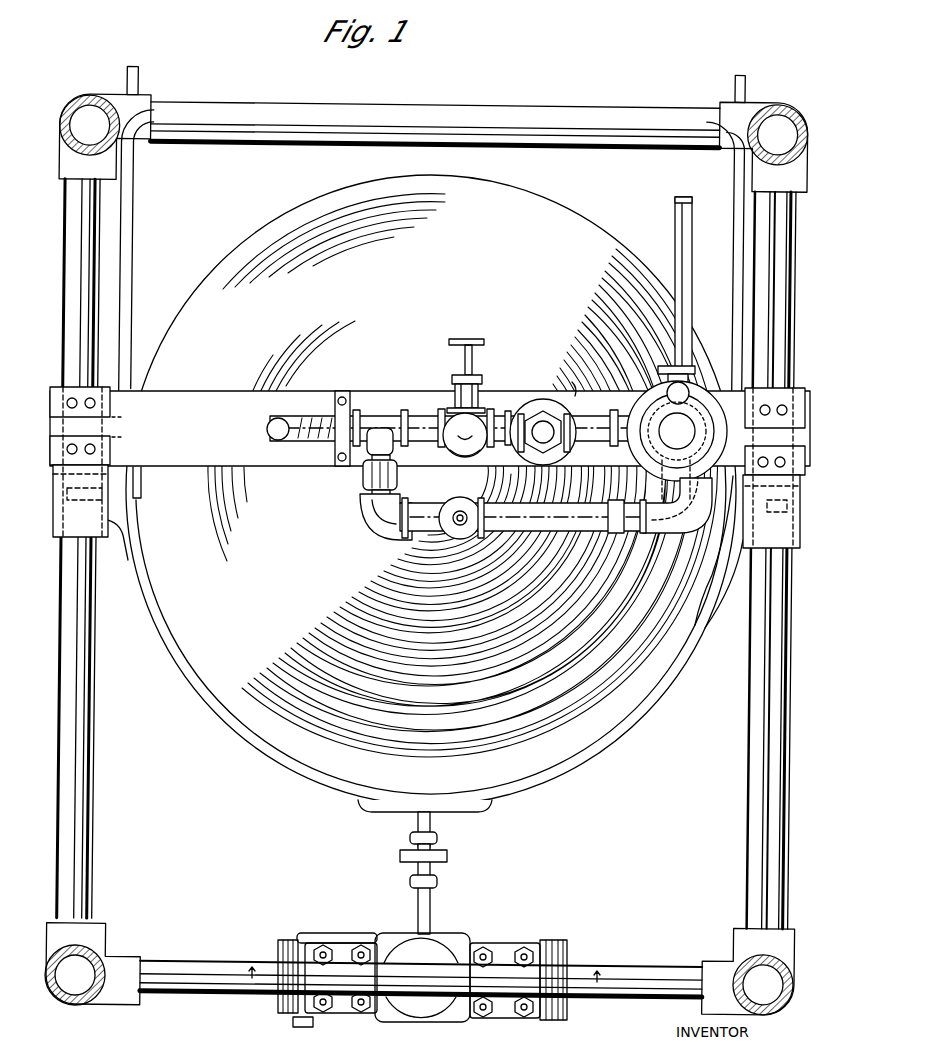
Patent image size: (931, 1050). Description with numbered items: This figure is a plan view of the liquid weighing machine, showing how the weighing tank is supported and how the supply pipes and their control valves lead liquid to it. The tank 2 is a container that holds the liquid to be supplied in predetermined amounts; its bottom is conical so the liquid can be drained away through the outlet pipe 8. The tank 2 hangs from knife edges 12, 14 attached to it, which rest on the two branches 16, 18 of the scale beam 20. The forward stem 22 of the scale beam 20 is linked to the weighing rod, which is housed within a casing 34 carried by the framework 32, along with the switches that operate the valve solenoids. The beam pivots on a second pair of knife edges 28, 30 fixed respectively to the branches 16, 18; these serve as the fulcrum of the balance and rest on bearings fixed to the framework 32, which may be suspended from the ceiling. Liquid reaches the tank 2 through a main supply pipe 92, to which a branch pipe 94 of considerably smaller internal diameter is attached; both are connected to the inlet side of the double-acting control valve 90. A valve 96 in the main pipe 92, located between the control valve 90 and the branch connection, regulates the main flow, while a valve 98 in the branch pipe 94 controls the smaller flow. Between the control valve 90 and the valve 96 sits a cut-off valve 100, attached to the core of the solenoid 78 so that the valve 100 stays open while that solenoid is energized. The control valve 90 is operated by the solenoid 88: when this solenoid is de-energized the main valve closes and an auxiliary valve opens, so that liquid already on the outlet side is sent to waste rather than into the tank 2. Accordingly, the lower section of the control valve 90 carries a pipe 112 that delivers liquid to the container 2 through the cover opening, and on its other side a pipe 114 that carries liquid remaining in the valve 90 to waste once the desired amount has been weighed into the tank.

The tank 2 is at (542, 178).
The outlet pipe 8 is at (422, 979).
The knife edge 12 is at (141, 480).
The knife edge 14 is at (717, 590).
The branch of scale beam 16 is at (130, 311).
The branch of scale beam 18 is at (738, 271).
The scale beam 20 is at (432, 822).
The stem of scale beam 22 is at (430, 915).
The knife edge 28 is at (98, 545).
The knife edge 30 is at (772, 517).
The framework 32 is at (276, 128).
The casing 34 is at (445, 945).
The solenoid 78 is at (572, 382).
The solenoid 88 is at (700, 410).
The control valve 90 is at (690, 395).
The supply pipe 92 is at (318, 410).
The branch pipe 94 is at (368, 490).
The valve 96 is at (456, 400).
The valve 98 is at (440, 540).
The cut-off valve 100 is at (536, 395).
The pipe 112 is at (652, 482).
The pipe 114 is at (691, 304).